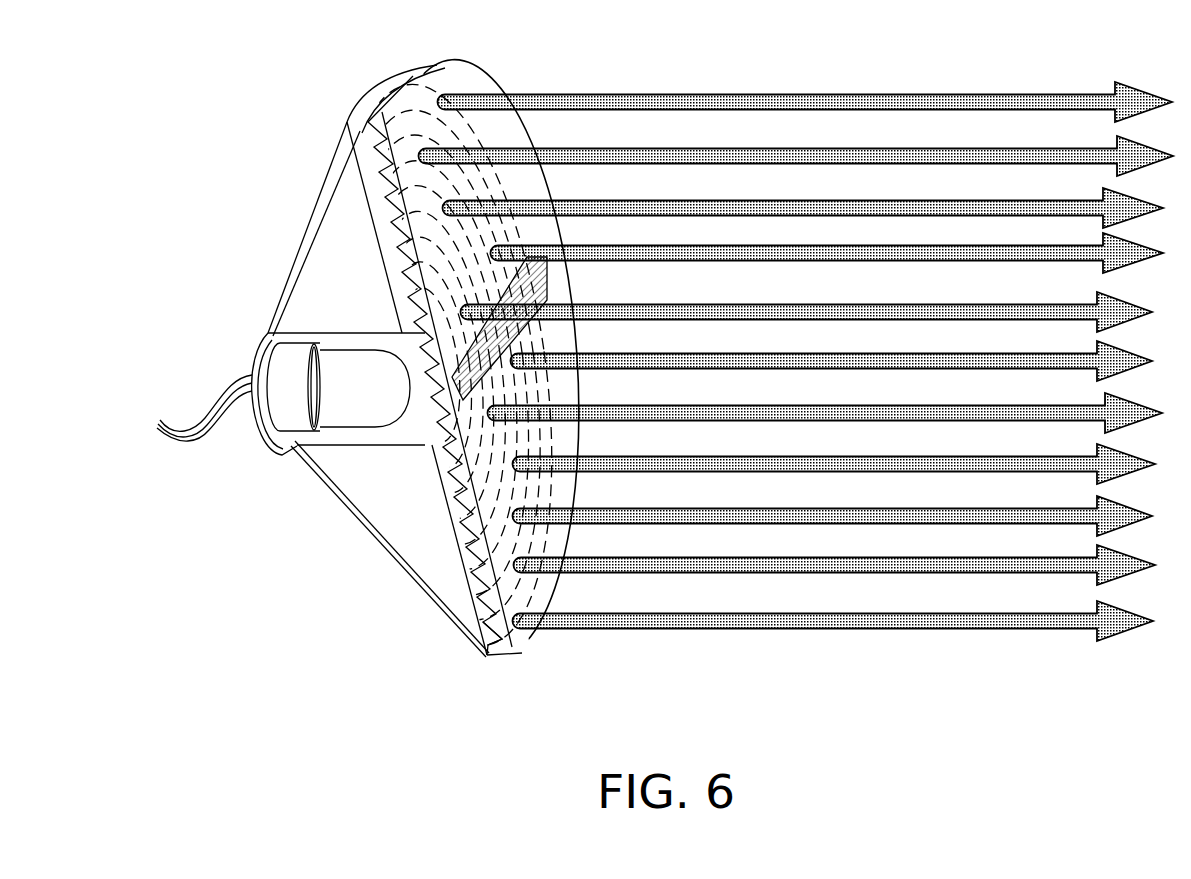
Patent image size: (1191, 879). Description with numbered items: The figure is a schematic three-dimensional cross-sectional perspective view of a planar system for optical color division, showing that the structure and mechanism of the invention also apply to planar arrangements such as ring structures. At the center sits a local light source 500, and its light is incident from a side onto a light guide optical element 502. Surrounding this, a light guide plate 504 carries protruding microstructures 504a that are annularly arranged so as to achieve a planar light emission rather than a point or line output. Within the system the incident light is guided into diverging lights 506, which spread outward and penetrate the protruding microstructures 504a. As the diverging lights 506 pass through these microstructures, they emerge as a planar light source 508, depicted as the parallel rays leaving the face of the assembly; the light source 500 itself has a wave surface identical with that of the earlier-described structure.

The local light source 500 is at (362, 428).
The light guide optical element 502 is at (453, 513).
The light guide plate 504 is at (510, 648).
The protruding microstructures 504a is at (482, 640).
The diverging lights 506 is at (517, 297).
The planar light source 508 is at (1023, 95).